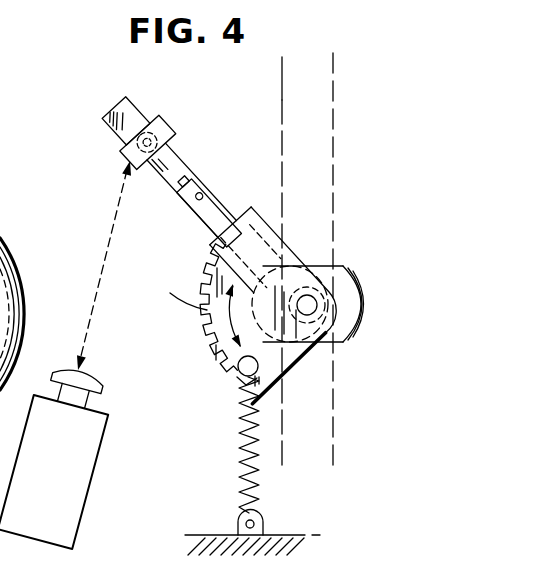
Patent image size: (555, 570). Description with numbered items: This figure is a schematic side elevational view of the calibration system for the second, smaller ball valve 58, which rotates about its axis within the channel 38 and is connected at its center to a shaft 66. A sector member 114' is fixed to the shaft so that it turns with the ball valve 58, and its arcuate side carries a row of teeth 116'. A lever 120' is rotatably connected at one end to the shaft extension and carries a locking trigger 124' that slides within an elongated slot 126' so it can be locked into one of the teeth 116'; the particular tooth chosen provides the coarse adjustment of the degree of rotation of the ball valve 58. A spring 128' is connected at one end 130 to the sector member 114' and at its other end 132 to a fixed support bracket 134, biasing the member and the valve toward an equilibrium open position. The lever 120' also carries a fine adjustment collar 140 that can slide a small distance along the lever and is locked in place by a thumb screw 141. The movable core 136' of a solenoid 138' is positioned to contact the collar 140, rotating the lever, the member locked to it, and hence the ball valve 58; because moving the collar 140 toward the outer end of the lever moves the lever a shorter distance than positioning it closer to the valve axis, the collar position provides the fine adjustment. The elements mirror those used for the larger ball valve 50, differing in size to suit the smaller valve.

The channel 38 is at (314, 94).
The ball valve 50 is at (12, 236).
The second ball valve 58 is at (349, 253).
The shaft 66 is at (331, 333).
The sector member 114' is at (186, 324).
The teeth 116' is at (193, 308).
The lever 120' is at (102, 110).
The locking trigger 124' is at (205, 190).
The elongated slot 126' is at (206, 186).
The spring 128' is at (220, 445).
The one end of spring 130 is at (240, 382).
The other end of spring 132 is at (245, 523).
The fixed support bracket 134 is at (265, 525).
The movable core 136' is at (99, 388).
The solenoid 138' is at (75, 472).
The fine adjustment collar 140 is at (150, 121).
The thumb screw 141 is at (113, 132).